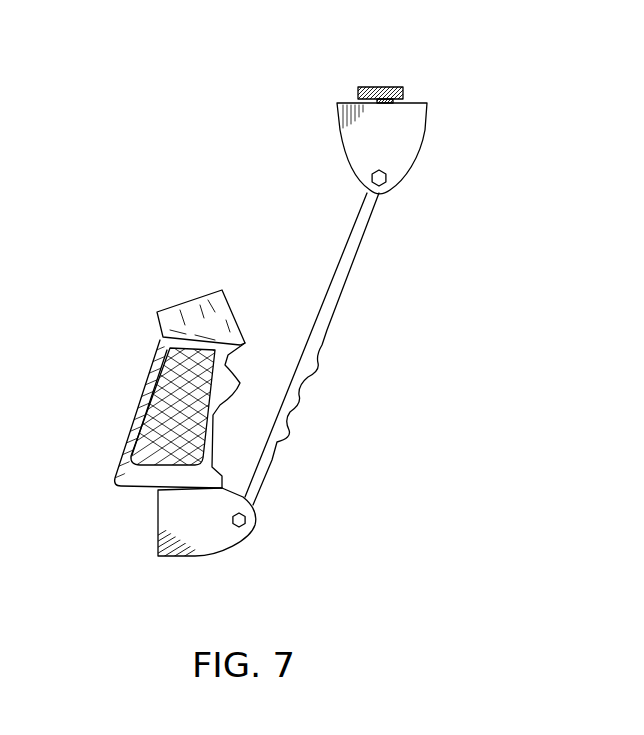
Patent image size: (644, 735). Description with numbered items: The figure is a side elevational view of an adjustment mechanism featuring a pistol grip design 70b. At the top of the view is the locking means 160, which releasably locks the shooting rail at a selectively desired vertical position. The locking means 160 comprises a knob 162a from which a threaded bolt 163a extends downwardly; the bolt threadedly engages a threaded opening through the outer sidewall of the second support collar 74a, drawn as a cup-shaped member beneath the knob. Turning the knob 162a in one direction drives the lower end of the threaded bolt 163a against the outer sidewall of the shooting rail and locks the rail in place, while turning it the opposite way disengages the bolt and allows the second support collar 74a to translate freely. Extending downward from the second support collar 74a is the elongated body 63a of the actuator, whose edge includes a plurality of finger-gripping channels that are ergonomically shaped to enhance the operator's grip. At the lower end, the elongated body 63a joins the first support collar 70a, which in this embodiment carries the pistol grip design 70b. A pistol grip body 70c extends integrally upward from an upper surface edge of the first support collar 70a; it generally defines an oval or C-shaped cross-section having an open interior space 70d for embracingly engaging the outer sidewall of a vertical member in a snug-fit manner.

The locking means 160 is at (432, 77).
The knob 162a is at (392, 84).
The threaded bolt 163a is at (377, 99).
The second support collar 74a is at (435, 125).
The elongated body 63a is at (347, 273).
The first support collar 70a is at (158, 526).
The pistol grip design 70b is at (85, 476).
The pistol grip body 70c is at (147, 360).
The open interior space 70d is at (223, 483).